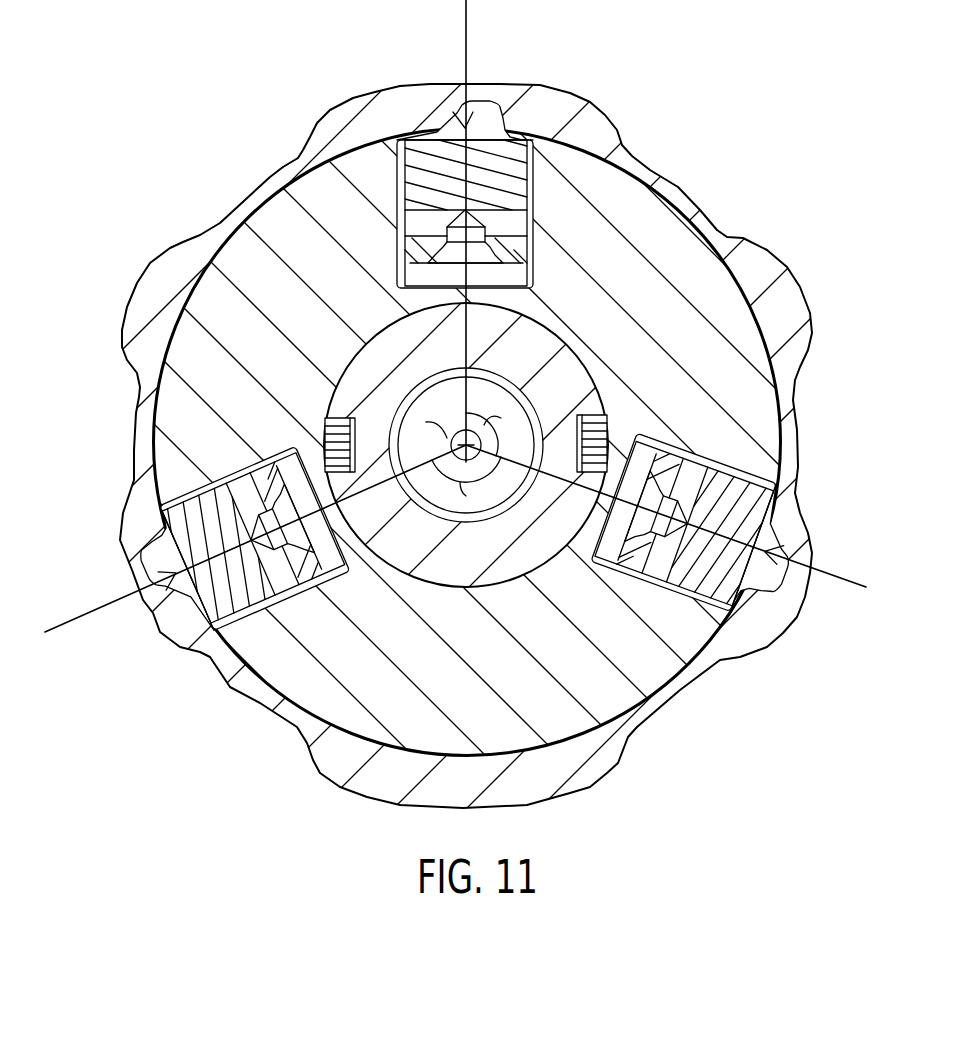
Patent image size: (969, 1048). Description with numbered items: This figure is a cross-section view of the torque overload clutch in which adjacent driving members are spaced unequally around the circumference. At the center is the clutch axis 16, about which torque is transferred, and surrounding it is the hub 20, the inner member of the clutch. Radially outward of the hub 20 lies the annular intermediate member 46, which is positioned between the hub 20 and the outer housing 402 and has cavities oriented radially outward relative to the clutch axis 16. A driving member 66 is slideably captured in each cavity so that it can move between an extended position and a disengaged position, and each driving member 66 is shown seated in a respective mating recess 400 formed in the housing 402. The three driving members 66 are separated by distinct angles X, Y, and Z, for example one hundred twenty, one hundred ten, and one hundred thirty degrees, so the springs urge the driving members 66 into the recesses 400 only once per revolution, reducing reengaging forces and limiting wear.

The clutch axis 16 is at (468, 448).
The hub 20 is at (485, 562).
The intermediate member 46 is at (672, 321).
The driving member 66 is at (514, 260).
The recess 400 is at (468, 99).
The housing 402 is at (235, 205).